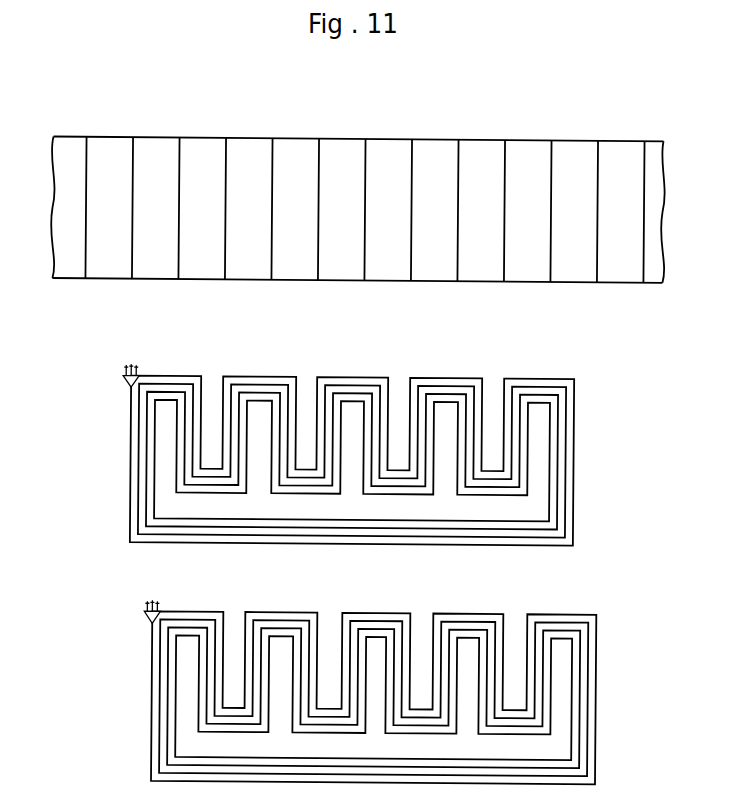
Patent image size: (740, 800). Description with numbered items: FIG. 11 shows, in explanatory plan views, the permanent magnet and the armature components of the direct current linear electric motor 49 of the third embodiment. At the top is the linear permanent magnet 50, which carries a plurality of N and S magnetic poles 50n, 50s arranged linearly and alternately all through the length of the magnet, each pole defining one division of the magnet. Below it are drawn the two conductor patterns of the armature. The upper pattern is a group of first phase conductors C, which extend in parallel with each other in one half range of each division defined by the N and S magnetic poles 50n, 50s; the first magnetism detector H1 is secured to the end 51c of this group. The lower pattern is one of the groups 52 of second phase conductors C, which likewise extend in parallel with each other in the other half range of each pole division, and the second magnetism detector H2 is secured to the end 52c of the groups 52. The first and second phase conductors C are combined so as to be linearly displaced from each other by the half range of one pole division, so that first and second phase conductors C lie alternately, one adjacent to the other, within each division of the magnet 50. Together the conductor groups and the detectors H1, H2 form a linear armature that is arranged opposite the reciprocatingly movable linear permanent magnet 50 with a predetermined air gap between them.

The direct current linear electric motor 49 is at (358, 177).
The linear permanent magnet 50 is at (204, 133).
The N magnetic pole 50n is at (251, 139).
The S magnetic pole 50s is at (302, 139).
The end of the groups of first phase conductors 51c is at (326, 436).
The end of the groups of second phase conductors 52c is at (343, 675).
The groups of second phase conductors 52 is at (380, 610).
The phase conductor C is at (267, 386).
The first magnetism detector H1 is at (108, 378).
The second magnetism detector H2 is at (125, 618).